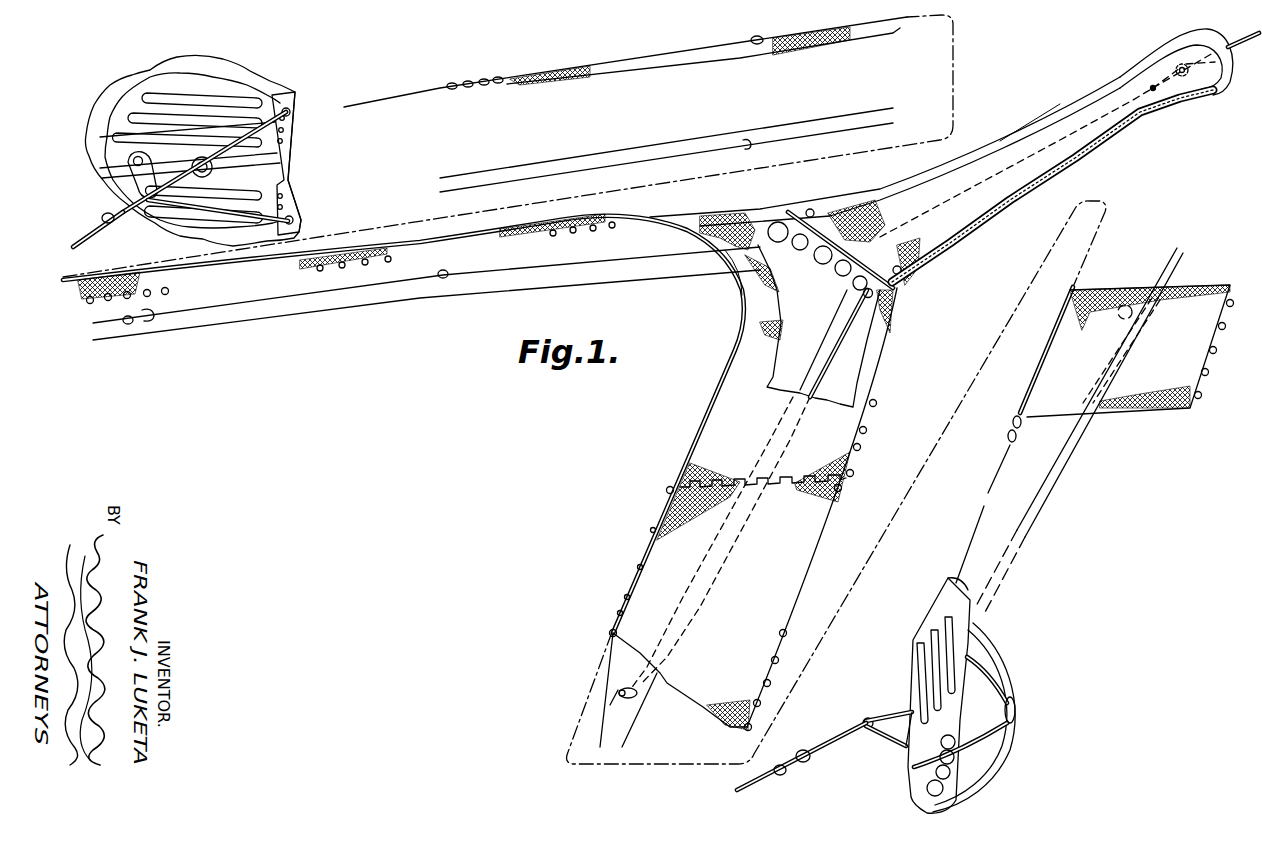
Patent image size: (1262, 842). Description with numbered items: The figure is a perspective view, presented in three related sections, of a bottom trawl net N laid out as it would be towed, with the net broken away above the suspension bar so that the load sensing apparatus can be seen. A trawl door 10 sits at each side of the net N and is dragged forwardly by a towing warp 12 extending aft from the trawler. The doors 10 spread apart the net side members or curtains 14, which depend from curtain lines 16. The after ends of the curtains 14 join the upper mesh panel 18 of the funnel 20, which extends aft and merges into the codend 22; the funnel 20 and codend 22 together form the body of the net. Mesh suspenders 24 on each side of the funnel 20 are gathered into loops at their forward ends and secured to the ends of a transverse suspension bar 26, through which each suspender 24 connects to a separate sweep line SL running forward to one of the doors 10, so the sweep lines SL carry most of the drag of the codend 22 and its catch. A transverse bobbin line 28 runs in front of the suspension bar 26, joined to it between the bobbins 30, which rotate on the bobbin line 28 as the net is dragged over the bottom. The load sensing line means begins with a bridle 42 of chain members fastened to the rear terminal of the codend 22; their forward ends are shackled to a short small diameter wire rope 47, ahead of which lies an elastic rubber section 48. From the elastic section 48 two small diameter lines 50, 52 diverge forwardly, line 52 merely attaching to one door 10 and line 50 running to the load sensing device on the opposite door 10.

The trawl door 10 is at (270, 68).
The towing warp 12 is at (92, 232).
The net side member or curtain 14 is at (763, 48).
The curtain line 16 is at (847, 32).
The upper mesh panel 18 is at (727, 270).
The funnel 20 is at (857, 210).
The codend 22 is at (1143, 103).
The suspender 24 is at (811, 209).
The suspension bar 26 is at (843, 245).
The bobbin line 28 is at (830, 268).
The bobbin 30 is at (813, 265).
The bridle 42 is at (1177, 105).
The wire rope or cable 47 is at (1047, 147).
The elastic section 48 is at (947, 200).
The small diameter line 50 is at (633, 686).
The small diameter line 52 is at (283, 314).
The sweep line SL is at (614, 168).
The net N is at (690, 287).